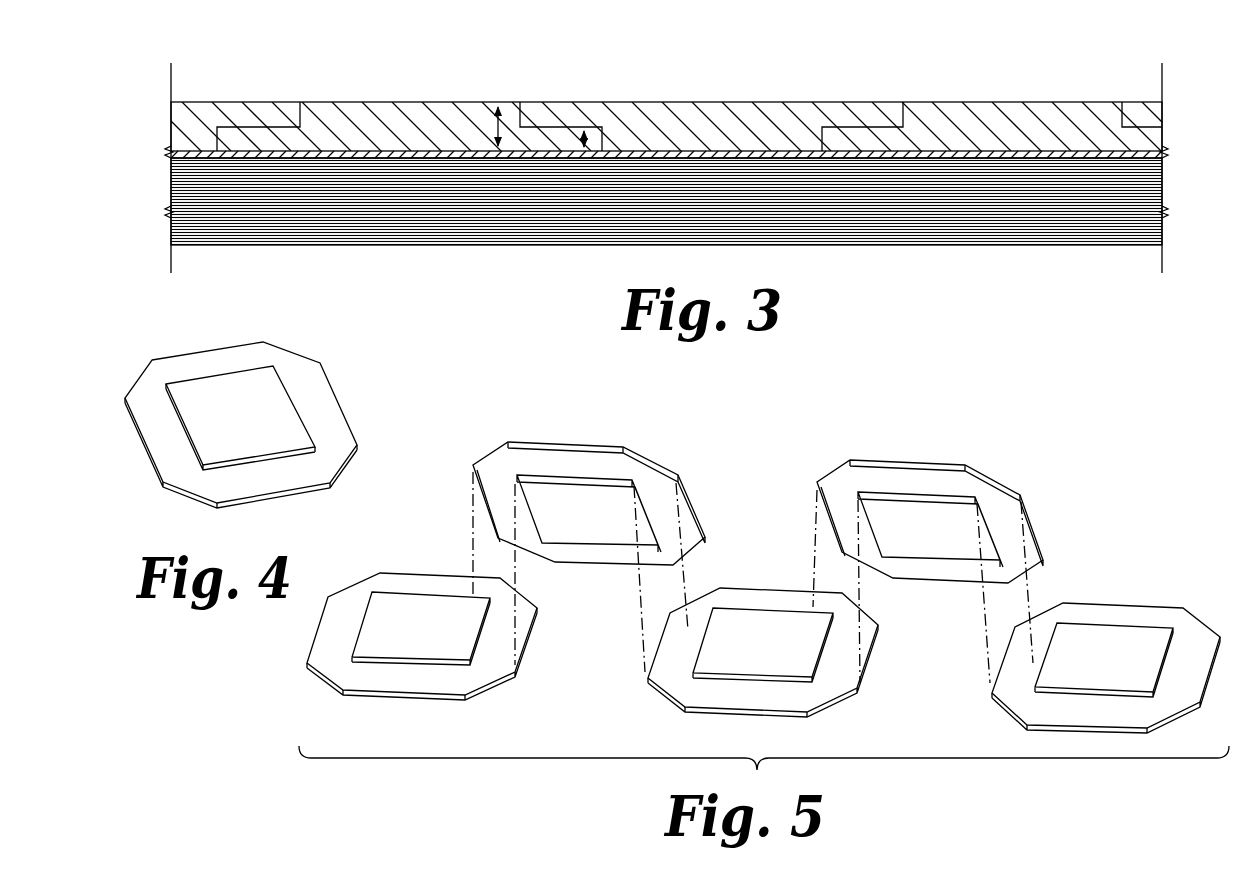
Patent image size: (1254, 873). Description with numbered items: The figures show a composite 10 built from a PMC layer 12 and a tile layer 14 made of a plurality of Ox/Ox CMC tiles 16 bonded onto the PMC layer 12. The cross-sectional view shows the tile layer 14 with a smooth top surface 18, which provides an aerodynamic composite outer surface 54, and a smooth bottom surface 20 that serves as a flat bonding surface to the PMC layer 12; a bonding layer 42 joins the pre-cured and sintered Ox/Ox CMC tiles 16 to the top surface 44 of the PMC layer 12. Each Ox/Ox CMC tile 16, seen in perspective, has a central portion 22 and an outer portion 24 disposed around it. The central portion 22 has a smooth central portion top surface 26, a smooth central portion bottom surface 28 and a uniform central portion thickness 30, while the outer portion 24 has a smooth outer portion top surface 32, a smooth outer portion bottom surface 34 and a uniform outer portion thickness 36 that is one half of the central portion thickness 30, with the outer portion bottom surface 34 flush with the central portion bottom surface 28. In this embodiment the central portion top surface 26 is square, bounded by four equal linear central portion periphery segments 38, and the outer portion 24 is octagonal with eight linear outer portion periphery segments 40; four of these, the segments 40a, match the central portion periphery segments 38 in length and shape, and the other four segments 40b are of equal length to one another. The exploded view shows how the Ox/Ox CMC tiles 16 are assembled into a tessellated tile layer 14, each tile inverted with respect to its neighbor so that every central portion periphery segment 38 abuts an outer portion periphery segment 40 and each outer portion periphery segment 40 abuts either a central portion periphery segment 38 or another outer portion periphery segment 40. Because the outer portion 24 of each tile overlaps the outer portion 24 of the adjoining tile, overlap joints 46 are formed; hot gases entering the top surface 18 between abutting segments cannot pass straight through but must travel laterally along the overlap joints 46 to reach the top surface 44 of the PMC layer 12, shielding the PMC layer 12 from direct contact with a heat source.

In FIG. 3, the composite 10 is at (933, 57).
In FIG. 3, the PMC layer 12 is at (1078, 218).
In FIG. 5, the PMC layer 12 is at (298, 643).
In FIG. 3, the tile layer 14 is at (729, 96).
In FIG. 3, the Ox/Ox CMC tile 16 is at (440, 95).
In FIG. 4, the Ox/Ox CMC tile 16 is at (117, 322).
In FIG. 5, the Ox/Ox CMC tile 16 is at (658, 450).
In FIG. 3, the top surface 18 is at (345, 102).
In FIG. 3, the bottom surface 20 is at (1087, 160).
In FIG. 3, the central portion 22 is at (372, 101).
In FIG. 4, the central portion 22 is at (272, 393).
In FIG. 3, the outer portion 24 is at (585, 130).
In FIG. 4, the outer portion 24 is at (336, 450).
In FIG. 3, the central portion top surface 26 is at (403, 101).
In FIG. 4, the central portion top surface 26 is at (284, 412).
In FIG. 3, the central portion bottom surface 28 is at (430, 159).
In FIG. 3, the central portion thickness 30 is at (498, 105).
In FIG. 3, the outer portion top surface 32 is at (545, 126).
In FIG. 4, the outer portion top surface 32 is at (303, 473).
In FIG. 3, the outer portion bottom surface 34 is at (553, 153).
In FIG. 3, the outer portion thickness 36 is at (603, 140).
In FIG. 4, the central portion periphery segment 38 is at (250, 374).
In FIG. 4, the outer portion periphery segment 40 is at (122, 418).
In FIG. 4, the outer portion periphery segment 40a is at (188, 356).
In FIG. 4, the outer portion periphery segment 40b is at (133, 372).
In FIG. 3, the bonding layer 42 is at (655, 101).
In FIG. 3, the top surface of the PMC layer 44 is at (1125, 160).
In FIG. 3, the overlap joint 46 is at (247, 127).
In FIG. 3, the aerodynamic composite outer surface 54 is at (797, 102).